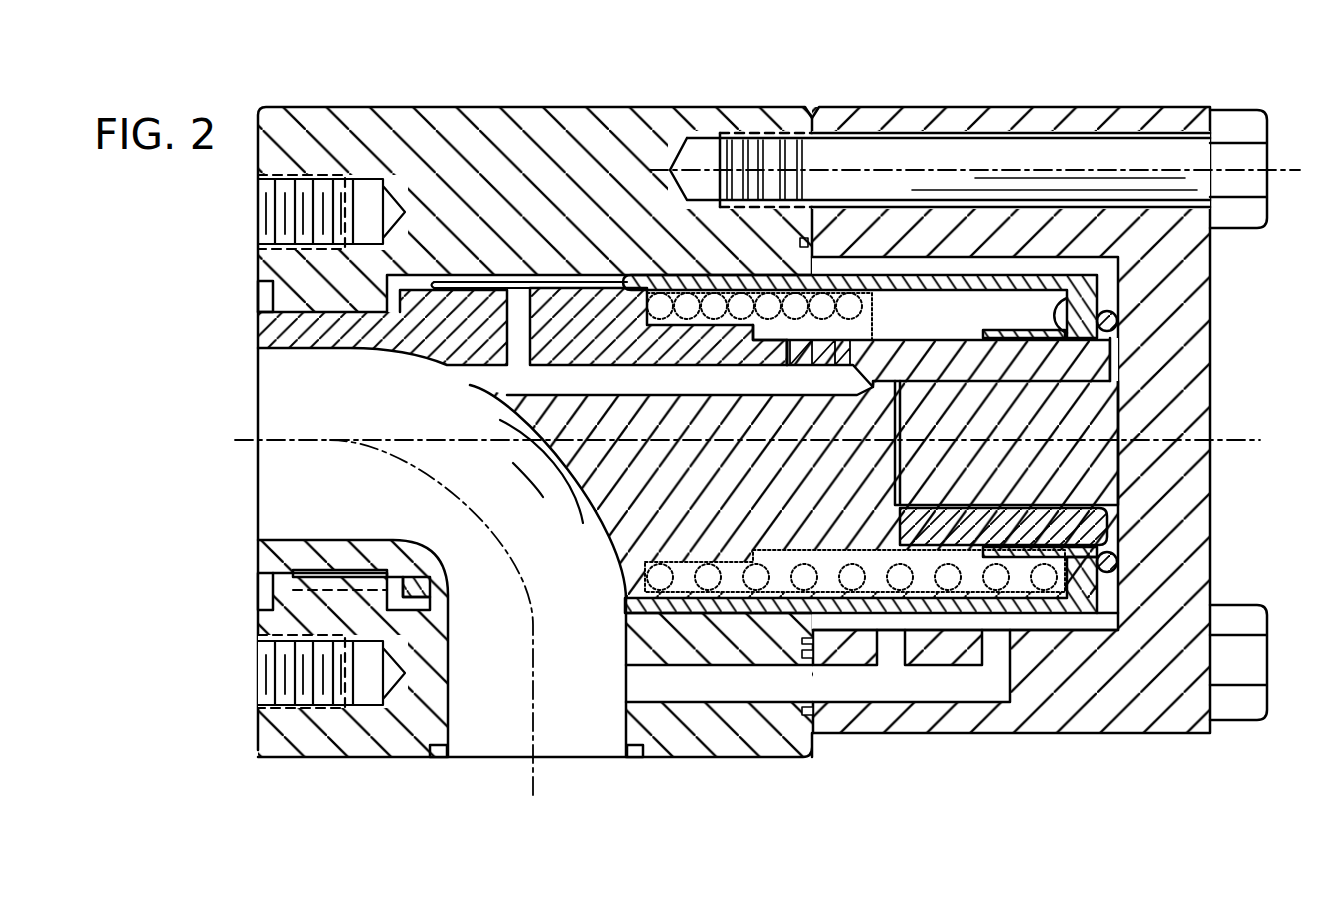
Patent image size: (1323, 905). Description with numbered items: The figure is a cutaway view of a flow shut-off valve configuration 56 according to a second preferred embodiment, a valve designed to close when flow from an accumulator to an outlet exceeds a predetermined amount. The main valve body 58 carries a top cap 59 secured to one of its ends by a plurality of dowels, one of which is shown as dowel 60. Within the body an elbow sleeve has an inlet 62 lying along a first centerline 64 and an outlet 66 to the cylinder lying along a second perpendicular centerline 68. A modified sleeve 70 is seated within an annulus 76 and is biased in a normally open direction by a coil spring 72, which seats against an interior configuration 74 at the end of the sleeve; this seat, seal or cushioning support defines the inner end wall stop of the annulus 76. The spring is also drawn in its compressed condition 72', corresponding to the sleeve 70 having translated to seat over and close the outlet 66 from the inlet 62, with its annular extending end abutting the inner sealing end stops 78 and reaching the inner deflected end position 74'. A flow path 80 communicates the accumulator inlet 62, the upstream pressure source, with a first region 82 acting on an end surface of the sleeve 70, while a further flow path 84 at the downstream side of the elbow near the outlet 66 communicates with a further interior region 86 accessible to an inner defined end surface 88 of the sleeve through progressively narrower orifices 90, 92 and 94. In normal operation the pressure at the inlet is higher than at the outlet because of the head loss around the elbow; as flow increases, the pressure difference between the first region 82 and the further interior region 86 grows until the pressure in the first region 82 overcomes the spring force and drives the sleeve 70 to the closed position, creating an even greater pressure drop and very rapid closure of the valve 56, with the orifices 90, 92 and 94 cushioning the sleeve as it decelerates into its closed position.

The flow shut-off valve configuration 56 is at (705, 65).
The main valve body 58 is at (502, 129).
The top cap 59 is at (1200, 382).
The dowel 60 is at (800, 242).
The inlet 62 is at (485, 743).
The first centerline 64 is at (538, 796).
The outlet 66 is at (290, 508).
The second perpendicular centerline 68 is at (232, 437).
The sleeve 70 is at (966, 293).
The coil spring 72 is at (855, 670).
The compressed condition of the spring 72' is at (729, 190).
The interior configuration 74 is at (946, 580).
The inner deflected end position 74' is at (778, 193).
The annulus 76 is at (1118, 560).
The inner sealing end stops 78 is at (434, 284).
The flow path 80 is at (738, 690).
The first region 82 is at (1102, 618).
The further flow path 84 is at (547, 383).
The further interior region 86 is at (1015, 303).
The inner defined end surface 88 is at (1063, 301).
The orifice 90 is at (855, 357).
The orifice 92 is at (812, 348).
The orifice 94 is at (778, 343).